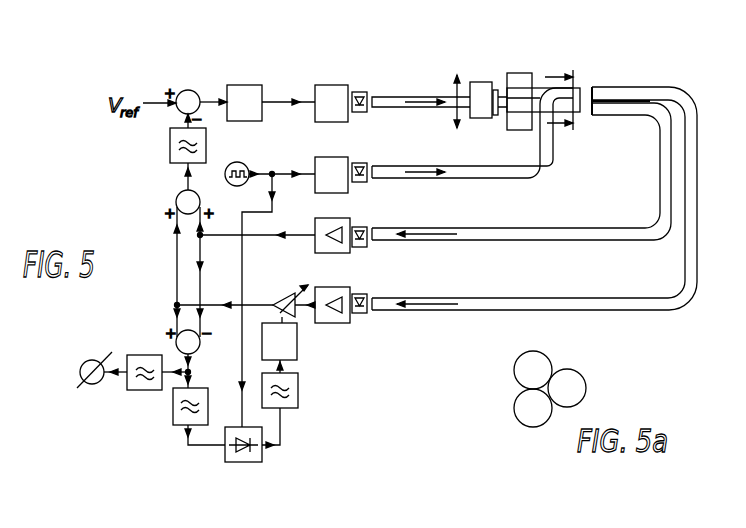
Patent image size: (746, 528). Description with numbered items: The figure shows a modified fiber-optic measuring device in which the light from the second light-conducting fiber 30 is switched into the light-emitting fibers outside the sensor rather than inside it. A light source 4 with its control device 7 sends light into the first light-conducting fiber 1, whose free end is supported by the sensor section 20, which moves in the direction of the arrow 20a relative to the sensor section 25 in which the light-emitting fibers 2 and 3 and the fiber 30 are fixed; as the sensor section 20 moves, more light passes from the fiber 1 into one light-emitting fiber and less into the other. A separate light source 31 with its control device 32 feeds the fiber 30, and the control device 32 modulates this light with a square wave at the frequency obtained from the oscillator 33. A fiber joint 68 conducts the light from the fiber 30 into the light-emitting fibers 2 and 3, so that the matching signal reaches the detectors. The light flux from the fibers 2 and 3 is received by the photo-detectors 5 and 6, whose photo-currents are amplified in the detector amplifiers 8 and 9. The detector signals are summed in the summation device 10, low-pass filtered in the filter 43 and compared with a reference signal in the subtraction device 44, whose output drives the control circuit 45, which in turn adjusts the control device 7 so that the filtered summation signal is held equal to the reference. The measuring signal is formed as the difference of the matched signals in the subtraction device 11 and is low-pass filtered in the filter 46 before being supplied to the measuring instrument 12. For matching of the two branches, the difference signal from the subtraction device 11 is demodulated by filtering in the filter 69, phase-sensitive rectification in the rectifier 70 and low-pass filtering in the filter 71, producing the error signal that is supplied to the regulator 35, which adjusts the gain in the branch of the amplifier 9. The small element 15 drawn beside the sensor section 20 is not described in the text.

In FIG. 5, the first light-conducting fiber 1 is at (410, 95).
In FIG. 5, the light-emitting fiber 2 is at (532, 88).
In FIG. 5a, the light-emitting fiber 2 is at (536, 351).
In FIG. 5, the light-emitting fiber 3 is at (576, 114).
In FIG. 5a, the light-emitting fiber 3 is at (531, 427).
In FIG. 5, the light source 4 is at (364, 92).
In FIG. 5, the photo-detector 5 is at (365, 243).
In FIG. 5, the photo-detector 6 is at (365, 313).
In FIG. 5, the control device 7 is at (333, 85).
In FIG. 5, the detector amplifier 8 is at (330, 218).
In FIG. 5, the detector amplifier 9 is at (330, 287).
In FIG. 5, the summation device 10 is at (178, 196).
In FIG. 5, the subtraction device 11 is at (200, 340).
In FIG. 5, the measuring instrument 12 is at (92, 385).
In FIG. 5, the diaphragm 15 is at (495, 116).
In FIG. 5, the sensor section 20 is at (477, 82).
In FIG. 5, the arrow 20a is at (456, 112).
In FIG. 5, the sensor section 25 is at (517, 73).
In FIG. 5, the second light-conducting fiber 30 is at (554, 180).
In FIG. 5a, the second light-conducting fiber 30 is at (586, 390).
In FIG. 5, the light source 31 is at (364, 163).
In FIG. 5, the control device 32 is at (320, 157).
In FIG. 5, the oscillator 33 is at (243, 163).
In FIG. 5, the control circuit 35 is at (282, 295).
In FIG. 5, the low-pass filter 43 is at (170, 148).
In FIG. 5, the subtraction device 44 is at (187, 88).
In FIG. 5, the control circuit 45 is at (243, 85).
In FIG. 5, the low-pass filter 46 is at (140, 390).
In FIG. 5, the fiber joint 68 is at (585, 92).
In FIG. 5, the filter 69 is at (173, 410).
In FIG. 5, the rectifier 70 is at (243, 462).
In FIG. 5, the filter 71 is at (298, 397).